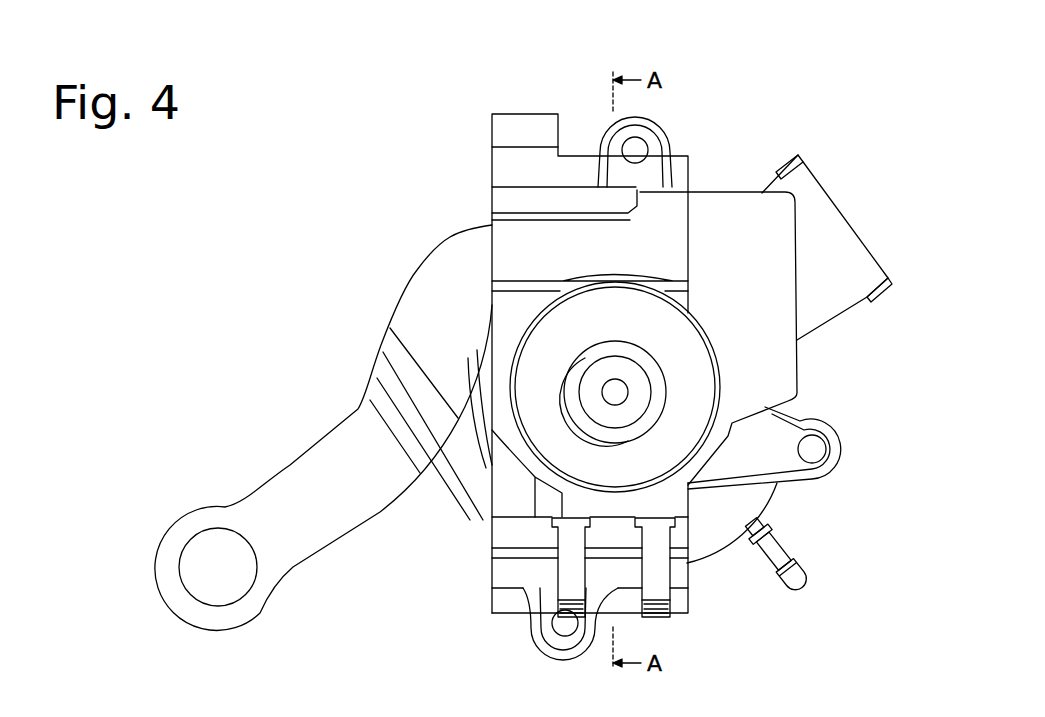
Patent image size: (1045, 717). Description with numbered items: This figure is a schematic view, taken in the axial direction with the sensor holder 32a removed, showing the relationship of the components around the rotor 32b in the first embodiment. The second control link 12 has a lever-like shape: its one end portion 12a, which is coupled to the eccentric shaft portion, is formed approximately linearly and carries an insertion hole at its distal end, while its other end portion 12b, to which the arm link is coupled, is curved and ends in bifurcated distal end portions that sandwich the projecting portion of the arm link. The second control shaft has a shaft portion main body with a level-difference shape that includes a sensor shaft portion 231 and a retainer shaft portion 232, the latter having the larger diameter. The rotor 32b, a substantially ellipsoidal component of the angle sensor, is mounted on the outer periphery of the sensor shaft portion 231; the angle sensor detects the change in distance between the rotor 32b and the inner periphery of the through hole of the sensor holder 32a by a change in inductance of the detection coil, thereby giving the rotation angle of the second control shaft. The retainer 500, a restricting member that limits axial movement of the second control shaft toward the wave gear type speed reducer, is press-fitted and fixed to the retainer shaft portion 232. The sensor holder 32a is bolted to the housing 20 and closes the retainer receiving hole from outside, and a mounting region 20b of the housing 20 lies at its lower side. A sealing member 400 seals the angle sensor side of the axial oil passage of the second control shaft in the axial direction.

The second control link 12 is at (285, 472).
The one end portion 12a is at (200, 520).
The other end portion 12b is at (468, 258).
The housing 20 is at (492, 565).
The housing mounting portion 20b is at (490, 538).
The sensor holder 32a is at (507, 352).
The rotor 32b is at (647, 358).
The sensor shaft portion 231 is at (587, 423).
The retainer shaft portion 232 is at (667, 405).
The sealing member 400 is at (603, 388).
The retainer 500 is at (547, 355).